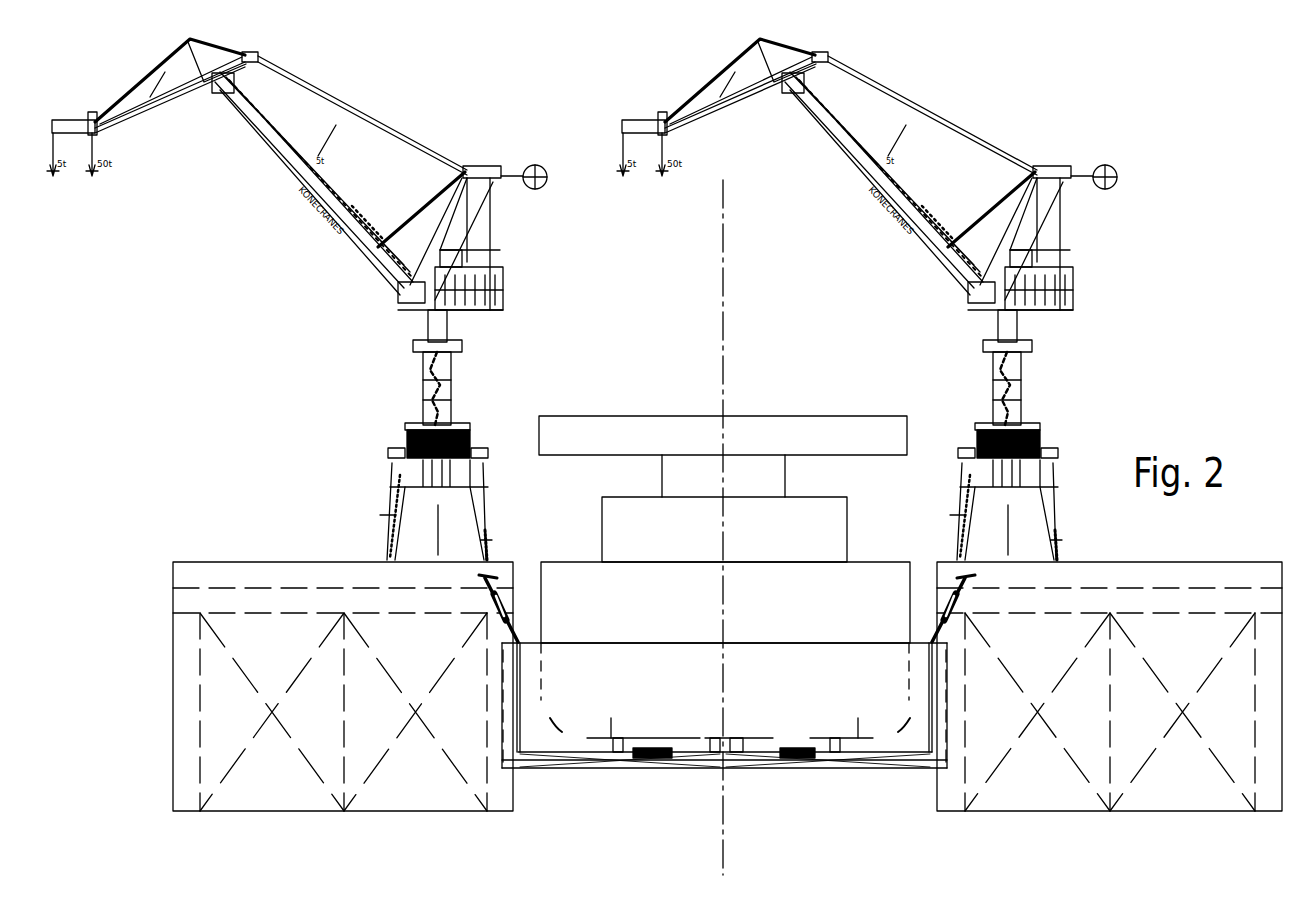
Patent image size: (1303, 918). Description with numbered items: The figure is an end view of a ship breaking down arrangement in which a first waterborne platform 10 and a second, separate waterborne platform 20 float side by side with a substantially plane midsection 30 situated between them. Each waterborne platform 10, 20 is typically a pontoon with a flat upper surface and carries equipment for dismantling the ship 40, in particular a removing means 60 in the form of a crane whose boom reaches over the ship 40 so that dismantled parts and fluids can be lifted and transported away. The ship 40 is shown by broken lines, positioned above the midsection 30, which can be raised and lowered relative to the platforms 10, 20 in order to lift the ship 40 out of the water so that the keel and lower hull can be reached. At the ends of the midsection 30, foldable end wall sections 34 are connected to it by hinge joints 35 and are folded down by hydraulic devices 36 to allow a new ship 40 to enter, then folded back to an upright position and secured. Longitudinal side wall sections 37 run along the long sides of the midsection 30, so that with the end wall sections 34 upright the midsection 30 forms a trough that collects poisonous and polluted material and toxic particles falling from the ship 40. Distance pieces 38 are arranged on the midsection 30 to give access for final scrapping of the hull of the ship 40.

The first waterborne platform 10 is at (395, 798).
The second waterborne platform 20 is at (1045, 797).
The midsection 30 is at (677, 763).
The foldable end wall section 34 is at (541, 738).
The hinge joint 35 is at (648, 752).
The hydraulic device 36 is at (500, 590).
The longitudinal side wall section 37 is at (502, 733).
The distance piece 38 is at (605, 745).
The ship 40 is at (611, 722).
The removing means 60 is at (425, 386).